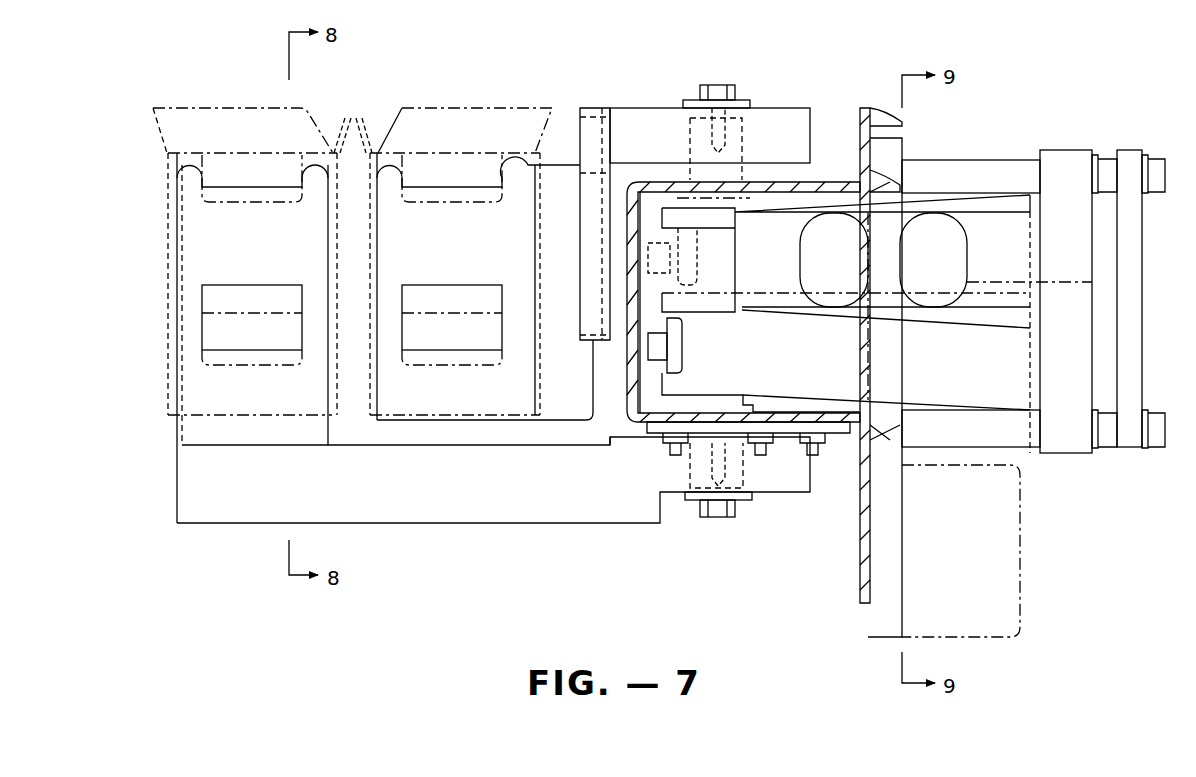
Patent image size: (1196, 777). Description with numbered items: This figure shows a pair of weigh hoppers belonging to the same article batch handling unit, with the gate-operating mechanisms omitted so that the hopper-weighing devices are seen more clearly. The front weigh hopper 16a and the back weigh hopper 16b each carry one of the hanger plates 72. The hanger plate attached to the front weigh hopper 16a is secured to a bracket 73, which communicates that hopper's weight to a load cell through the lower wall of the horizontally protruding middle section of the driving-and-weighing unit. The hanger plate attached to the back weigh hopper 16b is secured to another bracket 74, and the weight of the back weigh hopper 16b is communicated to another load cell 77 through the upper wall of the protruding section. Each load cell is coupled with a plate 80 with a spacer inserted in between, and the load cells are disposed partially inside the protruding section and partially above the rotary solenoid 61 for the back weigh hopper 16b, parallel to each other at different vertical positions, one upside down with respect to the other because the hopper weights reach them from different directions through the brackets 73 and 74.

The front weigh hopper 16a is at (213, 120).
The back weigh hopper 16b is at (462, 120).
The hanger plates 72 is at (220, 432).
The bracket 73 is at (640, 497).
The bracket 74 is at (600, 122).
The plate 80 is at (703, 218).
The load cell 77 is at (995, 222).
The rotary solenoid 61 is at (1000, 510).